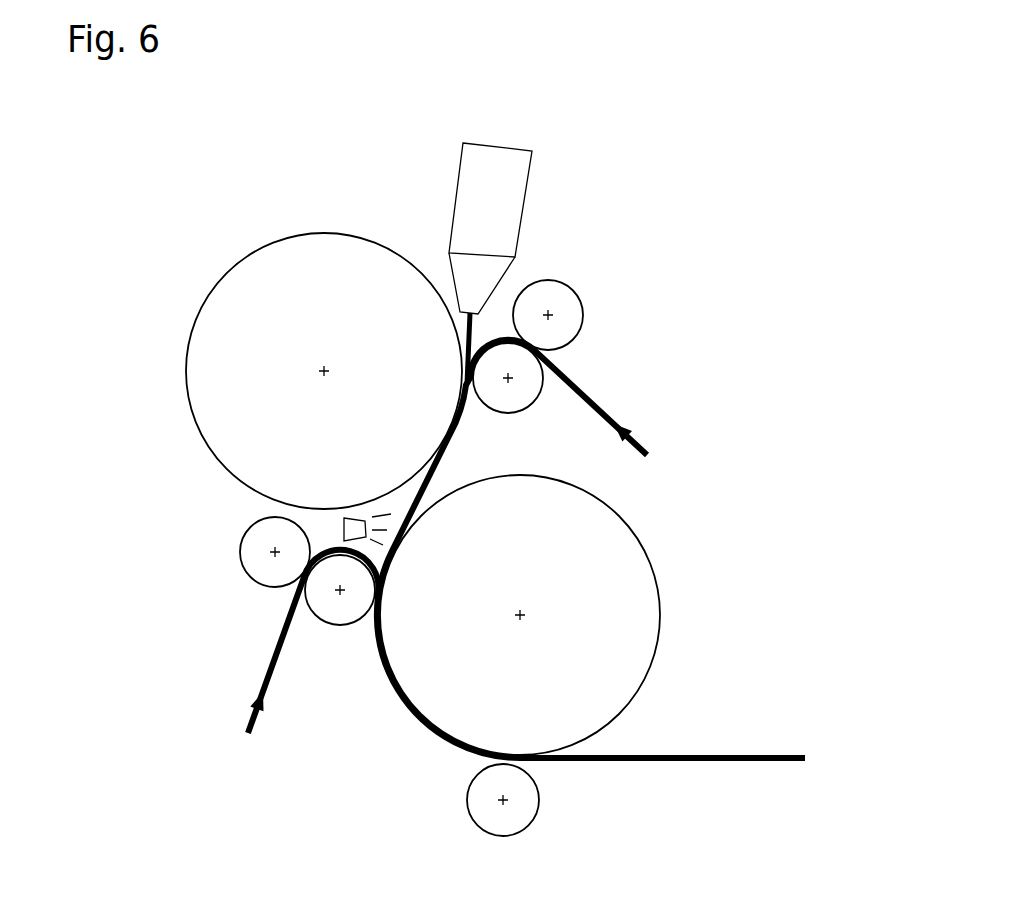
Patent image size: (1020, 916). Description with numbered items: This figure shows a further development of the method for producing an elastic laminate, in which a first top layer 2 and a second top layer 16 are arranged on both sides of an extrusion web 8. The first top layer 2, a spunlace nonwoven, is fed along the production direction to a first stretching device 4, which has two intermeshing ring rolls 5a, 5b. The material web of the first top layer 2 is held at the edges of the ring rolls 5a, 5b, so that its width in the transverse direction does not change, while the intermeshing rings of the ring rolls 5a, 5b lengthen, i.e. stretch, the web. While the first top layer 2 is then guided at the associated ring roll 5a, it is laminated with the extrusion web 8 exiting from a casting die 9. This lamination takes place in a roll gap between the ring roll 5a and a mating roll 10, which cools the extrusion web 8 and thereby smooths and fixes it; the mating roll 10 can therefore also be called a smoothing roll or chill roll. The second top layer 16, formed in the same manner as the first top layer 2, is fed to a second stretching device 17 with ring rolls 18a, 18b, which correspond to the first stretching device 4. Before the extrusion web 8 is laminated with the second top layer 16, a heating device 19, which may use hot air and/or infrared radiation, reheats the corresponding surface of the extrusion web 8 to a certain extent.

The first top layer 2 is at (640, 442).
The first stretching device 4 is at (595, 317).
The ring roll 5a is at (525, 390).
The ring roll 5b is at (572, 312).
The extrusion web 8 is at (467, 330).
The casting die 9 is at (498, 193).
The mating roll 10 is at (238, 317).
The second top layer 16 is at (260, 718).
The second stretching device 17 is at (252, 598).
The ring roll 18a is at (333, 623).
The ring roll 18b is at (265, 565).
The heating device 19 is at (357, 530).